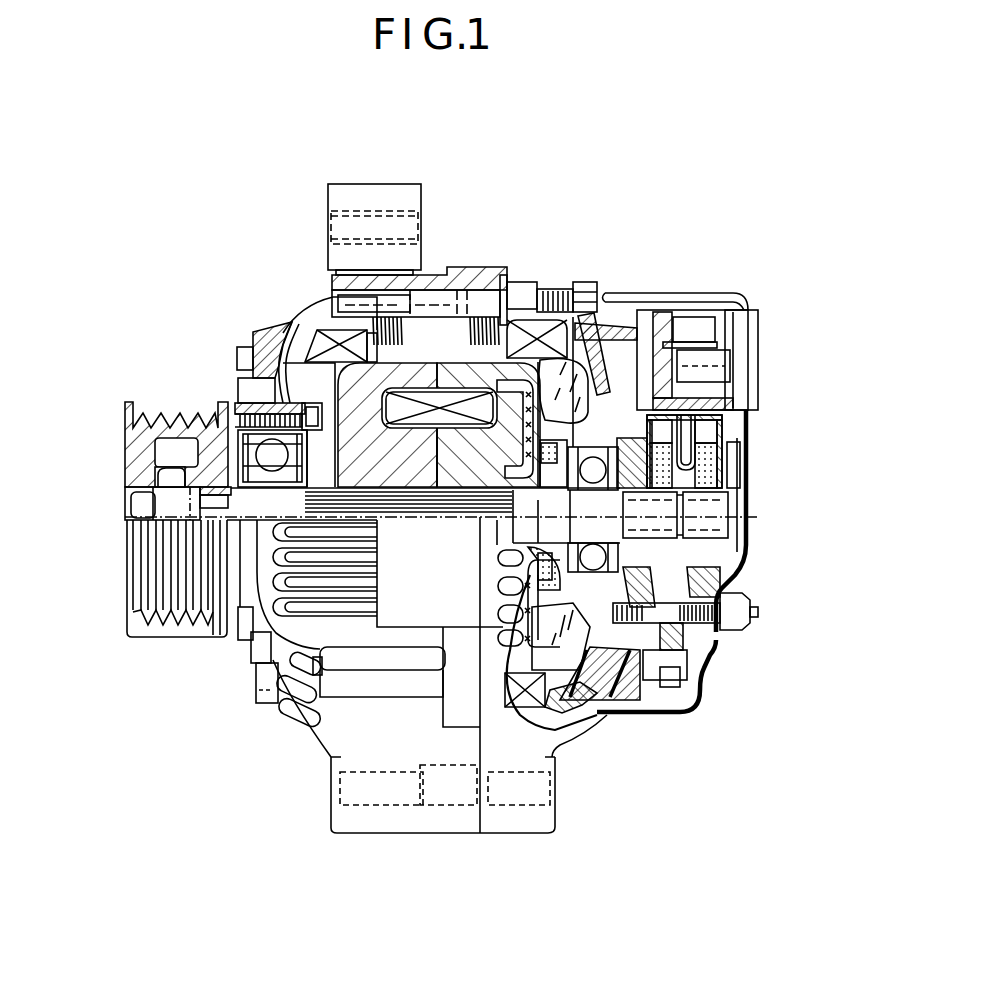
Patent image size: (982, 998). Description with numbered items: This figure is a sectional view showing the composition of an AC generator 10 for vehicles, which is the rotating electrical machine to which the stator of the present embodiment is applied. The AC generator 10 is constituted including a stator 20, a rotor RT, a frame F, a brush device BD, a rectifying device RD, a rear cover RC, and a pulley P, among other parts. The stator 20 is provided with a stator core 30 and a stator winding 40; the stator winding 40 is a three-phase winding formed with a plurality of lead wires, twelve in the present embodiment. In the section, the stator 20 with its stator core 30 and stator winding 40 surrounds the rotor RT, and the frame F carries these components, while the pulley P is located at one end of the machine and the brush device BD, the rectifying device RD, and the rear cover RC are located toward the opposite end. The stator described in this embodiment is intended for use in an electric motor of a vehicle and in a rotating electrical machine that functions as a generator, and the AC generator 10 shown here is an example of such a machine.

The AC generator 10 is at (590, 186).
The stator 20 is at (440, 300).
The stator core 30 is at (470, 335).
The stator winding 40 is at (320, 343).
The rotor RT is at (296, 357).
The frame F is at (347, 738).
The pulley P is at (118, 580).
The brush device BD is at (740, 438).
The rectifying device RD is at (693, 647).
The rear cover RC is at (693, 700).